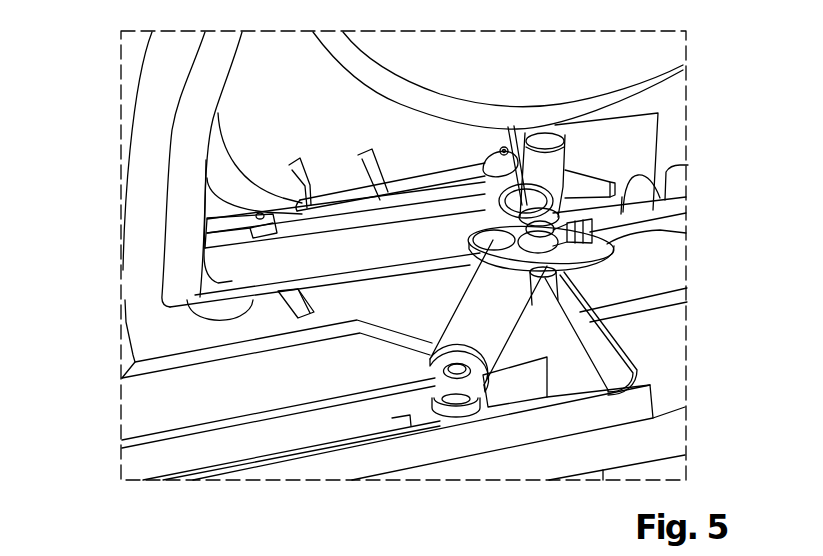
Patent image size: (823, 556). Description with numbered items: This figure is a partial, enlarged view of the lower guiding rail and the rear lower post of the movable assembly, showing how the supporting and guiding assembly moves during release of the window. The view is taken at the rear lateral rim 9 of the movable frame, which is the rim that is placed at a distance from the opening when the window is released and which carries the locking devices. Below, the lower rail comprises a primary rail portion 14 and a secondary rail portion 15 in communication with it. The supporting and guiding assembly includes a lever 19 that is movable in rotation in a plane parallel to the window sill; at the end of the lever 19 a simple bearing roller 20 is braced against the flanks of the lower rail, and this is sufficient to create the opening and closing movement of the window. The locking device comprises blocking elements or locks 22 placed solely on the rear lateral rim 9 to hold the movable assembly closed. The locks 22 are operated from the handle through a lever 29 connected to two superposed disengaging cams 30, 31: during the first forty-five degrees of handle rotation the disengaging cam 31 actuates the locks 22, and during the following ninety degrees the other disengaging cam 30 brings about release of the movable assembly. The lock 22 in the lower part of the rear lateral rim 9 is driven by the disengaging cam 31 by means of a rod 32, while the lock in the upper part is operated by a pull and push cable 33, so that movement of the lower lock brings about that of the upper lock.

The rear lateral rim 9 is at (150, 178).
The primary rail portion 14 is at (143, 463).
The secondary rail portion 15 is at (613, 340).
The lever 19 is at (477, 317).
The bearing roller 20 is at (393, 418).
The blocking element 22 is at (217, 297).
The lever 29 is at (623, 213).
The disengaging cam 30 is at (582, 272).
The disengaging cam 31 is at (605, 252).
The rod 32 is at (340, 216).
The pull and push cable 33 is at (407, 187).